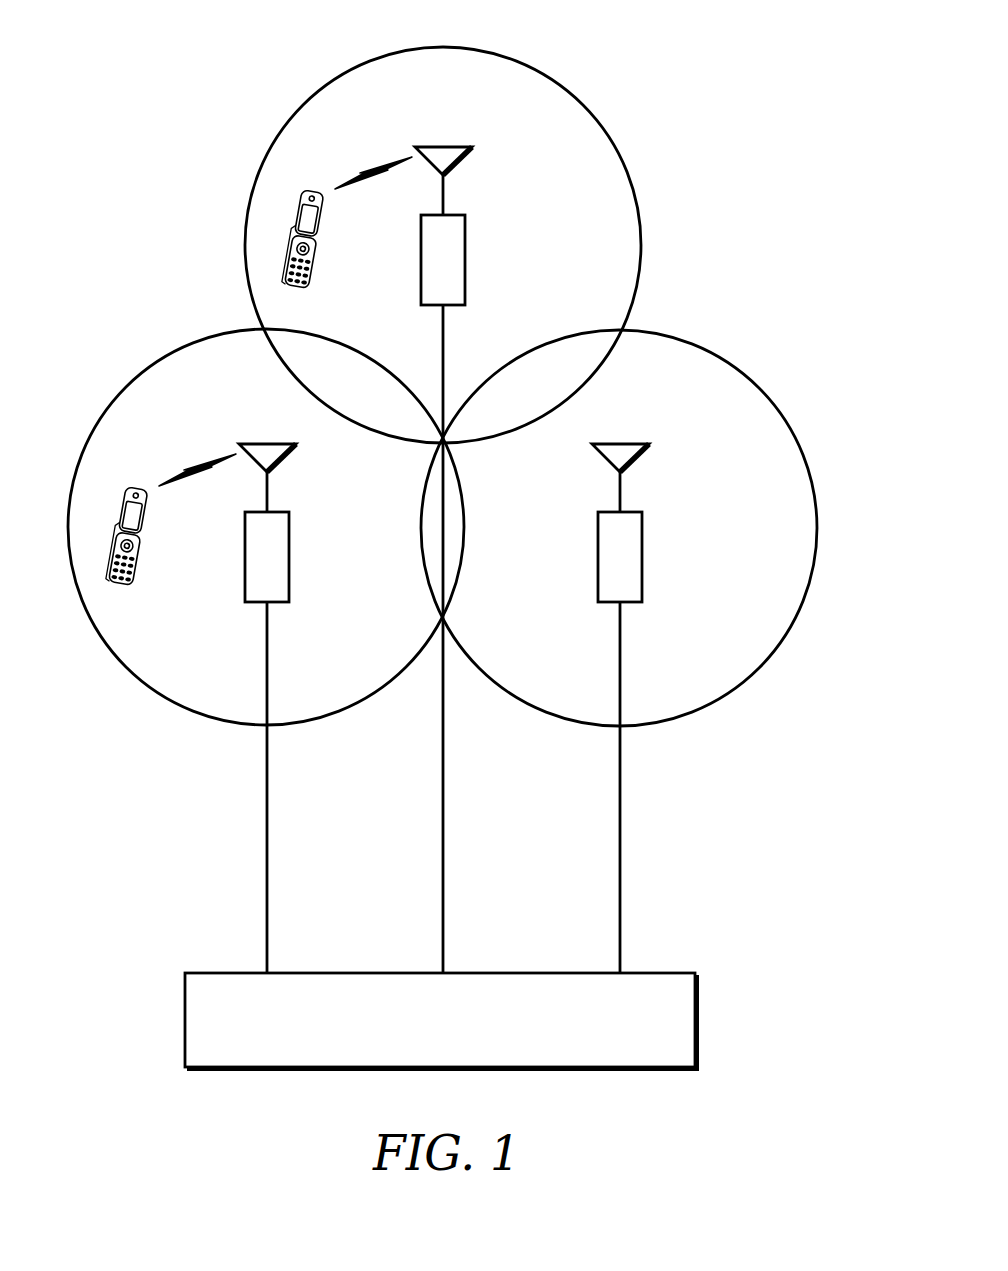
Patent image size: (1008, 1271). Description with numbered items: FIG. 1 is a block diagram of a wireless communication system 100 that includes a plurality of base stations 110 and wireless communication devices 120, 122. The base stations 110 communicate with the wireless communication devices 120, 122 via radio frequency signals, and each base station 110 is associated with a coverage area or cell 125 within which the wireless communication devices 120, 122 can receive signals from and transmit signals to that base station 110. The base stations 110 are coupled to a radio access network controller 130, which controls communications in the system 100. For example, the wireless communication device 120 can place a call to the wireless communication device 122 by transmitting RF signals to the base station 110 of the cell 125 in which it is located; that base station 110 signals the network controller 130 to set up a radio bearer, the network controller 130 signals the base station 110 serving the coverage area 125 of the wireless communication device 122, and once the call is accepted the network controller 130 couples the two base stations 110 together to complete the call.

The wireless communication system 100 is at (121, 69).
The base station 110 is at (465, 258).
The wireless communication device 120 is at (318, 258).
The wireless communication device 122 is at (142, 555).
The coverage area or cell 125 is at (443, 46).
The radio access network controller 130 is at (670, 973).